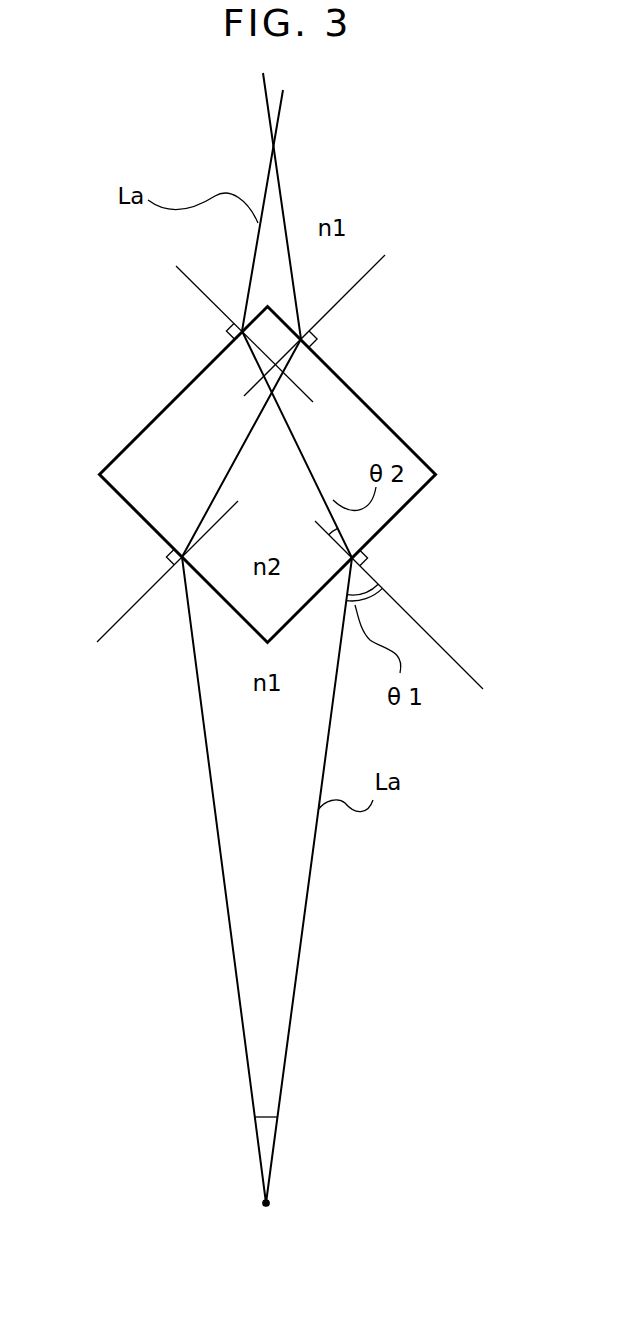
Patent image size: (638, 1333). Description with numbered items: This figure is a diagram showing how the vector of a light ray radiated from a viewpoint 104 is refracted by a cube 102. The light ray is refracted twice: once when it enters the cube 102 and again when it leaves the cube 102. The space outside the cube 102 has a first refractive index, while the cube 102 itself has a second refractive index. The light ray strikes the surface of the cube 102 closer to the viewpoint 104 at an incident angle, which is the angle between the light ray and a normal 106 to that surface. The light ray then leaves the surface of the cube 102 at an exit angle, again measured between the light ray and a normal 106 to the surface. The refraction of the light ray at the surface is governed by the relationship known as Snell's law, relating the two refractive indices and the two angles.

The cube 102 is at (360, 393).
The viewpoint 104 is at (268, 1225).
The normal 106 is at (437, 642).